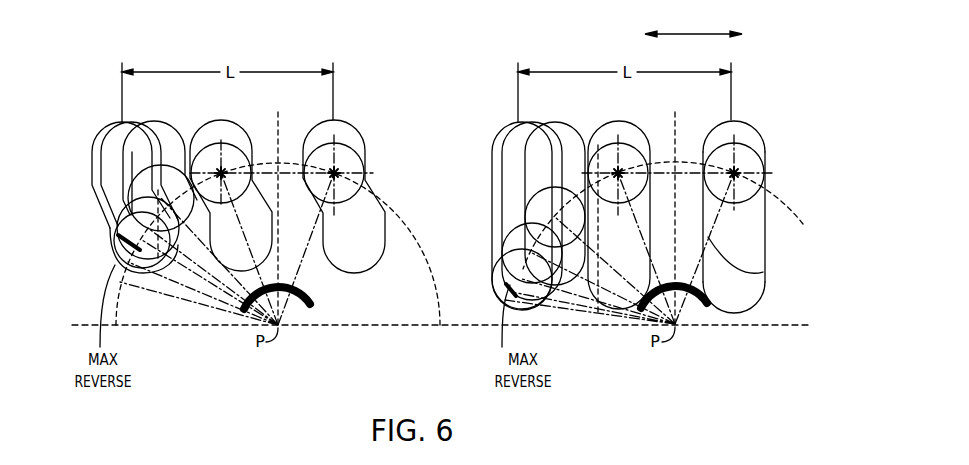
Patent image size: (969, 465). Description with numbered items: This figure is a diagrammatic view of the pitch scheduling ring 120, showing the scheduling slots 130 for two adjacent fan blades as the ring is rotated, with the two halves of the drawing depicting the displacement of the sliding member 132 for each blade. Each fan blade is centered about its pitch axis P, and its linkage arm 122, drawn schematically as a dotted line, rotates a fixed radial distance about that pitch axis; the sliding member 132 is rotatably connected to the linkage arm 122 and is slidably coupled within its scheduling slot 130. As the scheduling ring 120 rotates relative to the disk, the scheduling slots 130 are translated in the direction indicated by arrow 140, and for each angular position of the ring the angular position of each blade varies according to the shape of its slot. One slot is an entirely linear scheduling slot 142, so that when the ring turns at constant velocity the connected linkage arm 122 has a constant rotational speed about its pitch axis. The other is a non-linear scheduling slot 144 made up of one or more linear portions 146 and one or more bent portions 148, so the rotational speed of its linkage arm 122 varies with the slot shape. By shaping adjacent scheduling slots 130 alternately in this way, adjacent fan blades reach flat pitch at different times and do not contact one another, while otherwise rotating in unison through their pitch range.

The scheduling ring 120 is at (781, 102).
The linkage arm 122 is at (765, 284).
The scheduling slot 130 is at (752, 128).
The sliding member 132 is at (752, 163).
The arrow 140 is at (695, 32).
The linear scheduling slot 142 is at (770, 259).
The non-linear scheduling slot 144 is at (364, 119).
The linear portion 146 is at (365, 151).
The bent portion 148 is at (373, 174).